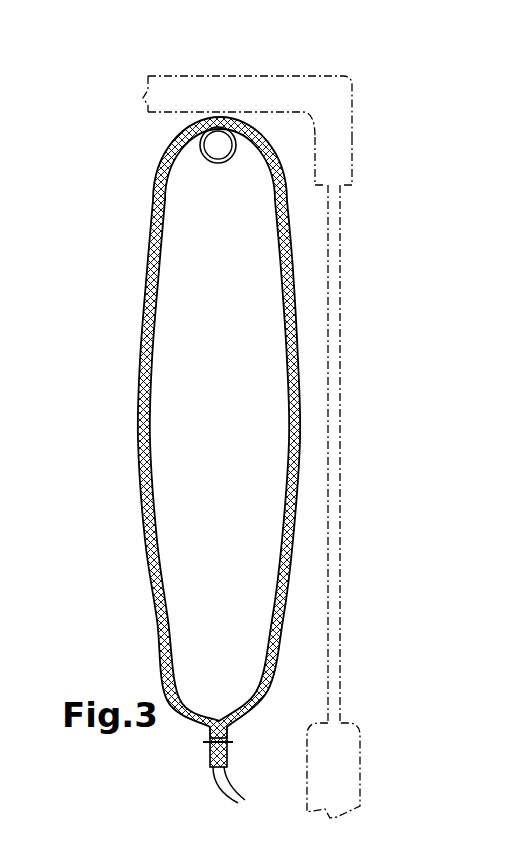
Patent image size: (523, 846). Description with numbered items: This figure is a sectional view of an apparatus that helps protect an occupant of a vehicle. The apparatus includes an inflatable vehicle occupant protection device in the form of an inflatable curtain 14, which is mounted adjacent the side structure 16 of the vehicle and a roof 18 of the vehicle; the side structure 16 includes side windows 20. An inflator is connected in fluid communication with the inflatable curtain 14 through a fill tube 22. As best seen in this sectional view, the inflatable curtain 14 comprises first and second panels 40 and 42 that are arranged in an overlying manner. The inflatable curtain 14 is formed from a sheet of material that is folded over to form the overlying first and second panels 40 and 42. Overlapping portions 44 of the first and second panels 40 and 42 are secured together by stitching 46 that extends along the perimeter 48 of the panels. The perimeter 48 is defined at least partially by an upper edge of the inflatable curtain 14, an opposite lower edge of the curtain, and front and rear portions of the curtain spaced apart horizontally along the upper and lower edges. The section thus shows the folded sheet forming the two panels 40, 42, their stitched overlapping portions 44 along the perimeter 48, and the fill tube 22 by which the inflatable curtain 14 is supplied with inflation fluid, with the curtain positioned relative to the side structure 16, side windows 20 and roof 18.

The inflatable curtain 14 is at (191, 427).
The side structure 16 is at (328, 150).
The roof 18 is at (247, 88).
The side windows 20 is at (333, 398).
The fill tube 22 is at (205, 158).
The first panel 40 is at (285, 340).
The second panel 42 is at (142, 327).
The overlapping portions 44 is at (238, 803).
The stitching 46 is at (205, 745).
The perimeter 48 is at (228, 755).